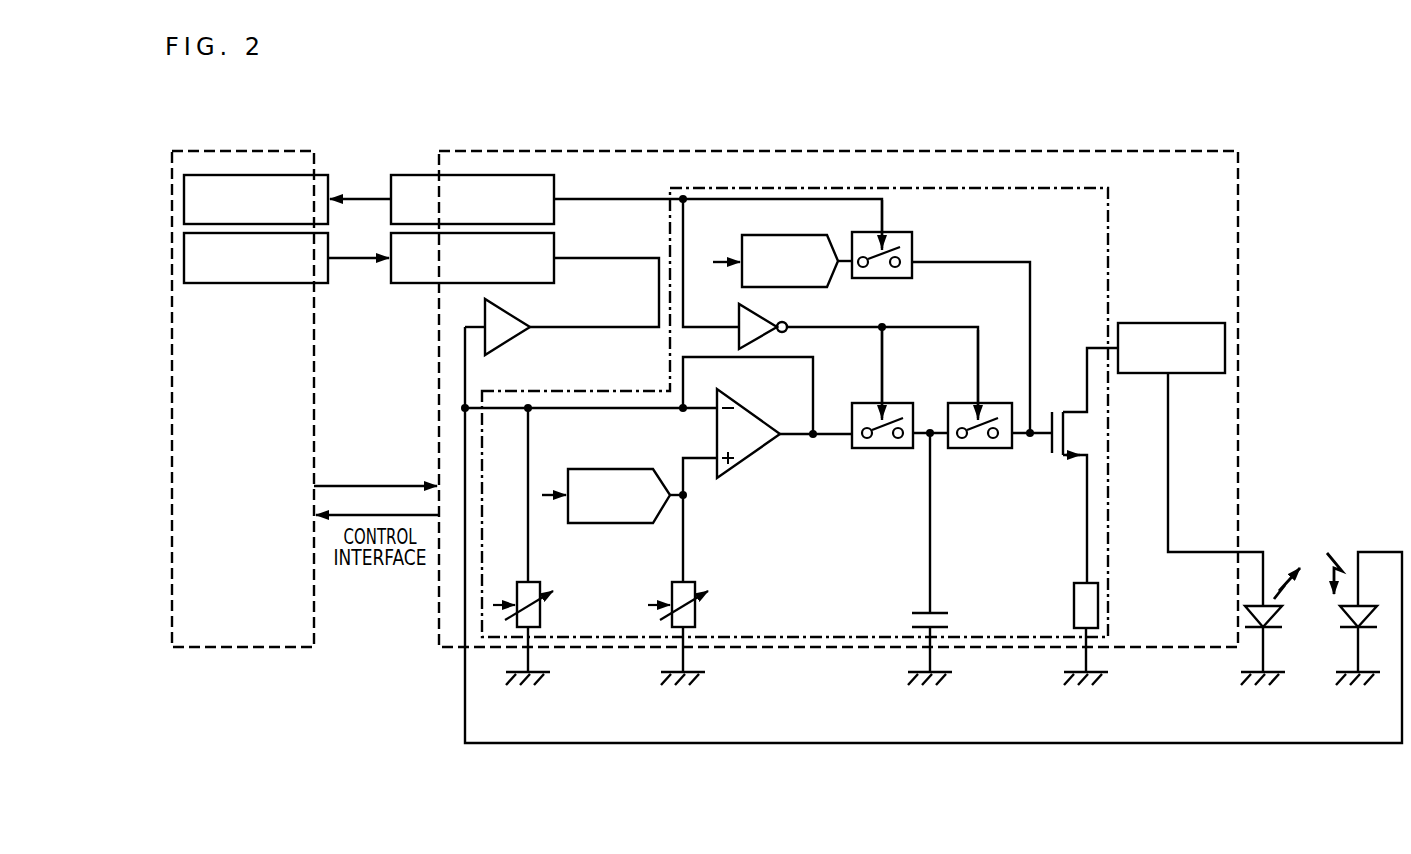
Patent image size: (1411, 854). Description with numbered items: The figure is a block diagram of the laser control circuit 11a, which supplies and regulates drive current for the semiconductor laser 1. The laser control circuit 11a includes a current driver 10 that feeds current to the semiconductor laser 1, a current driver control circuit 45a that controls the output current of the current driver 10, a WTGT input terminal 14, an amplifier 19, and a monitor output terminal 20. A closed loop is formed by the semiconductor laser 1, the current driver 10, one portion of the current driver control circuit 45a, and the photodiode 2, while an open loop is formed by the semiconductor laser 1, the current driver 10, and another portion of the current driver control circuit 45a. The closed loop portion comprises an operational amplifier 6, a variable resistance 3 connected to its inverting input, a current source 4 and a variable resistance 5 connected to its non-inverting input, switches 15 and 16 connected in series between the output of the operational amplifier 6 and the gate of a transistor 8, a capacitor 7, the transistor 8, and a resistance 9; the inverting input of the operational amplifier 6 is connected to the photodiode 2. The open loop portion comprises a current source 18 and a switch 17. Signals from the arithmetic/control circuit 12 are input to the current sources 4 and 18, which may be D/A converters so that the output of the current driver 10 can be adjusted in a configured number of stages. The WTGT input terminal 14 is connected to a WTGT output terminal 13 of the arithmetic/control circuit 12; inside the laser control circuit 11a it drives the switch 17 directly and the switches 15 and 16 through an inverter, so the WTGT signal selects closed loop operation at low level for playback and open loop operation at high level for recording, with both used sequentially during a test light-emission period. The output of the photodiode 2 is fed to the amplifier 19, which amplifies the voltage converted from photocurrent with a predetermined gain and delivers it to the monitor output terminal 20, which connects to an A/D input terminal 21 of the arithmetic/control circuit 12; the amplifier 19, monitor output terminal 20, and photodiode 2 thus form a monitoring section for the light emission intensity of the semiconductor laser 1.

The semiconductor laser 1 is at (1273, 615).
The photodiode 2 is at (1347, 615).
The variable resistance 3 is at (537, 578).
The current source 4 is at (613, 468).
The variable resistance 5 is at (692, 578).
The operational amplifier 6 is at (753, 412).
The capacitor 7 is at (925, 612).
The transistor 8 is at (1050, 450).
The resistance 9 is at (1097, 608).
The current driver 10 is at (1170, 322).
The laser control circuit 11a is at (875, 150).
The arithmetic/control circuit 12 is at (262, 150).
The WTGT output terminal 13 is at (288, 173).
The WTGT input terminal 14 is at (423, 175).
The switch 15 is at (895, 402).
The switch 16 is at (967, 402).
The switch 17 is at (898, 232).
The current source 18 is at (787, 235).
The amplifier 19 is at (508, 338).
The monitor output terminal 20 is at (428, 283).
The A/D input terminal 21 is at (297, 283).
The current driver control circuit 45a is at (997, 188).